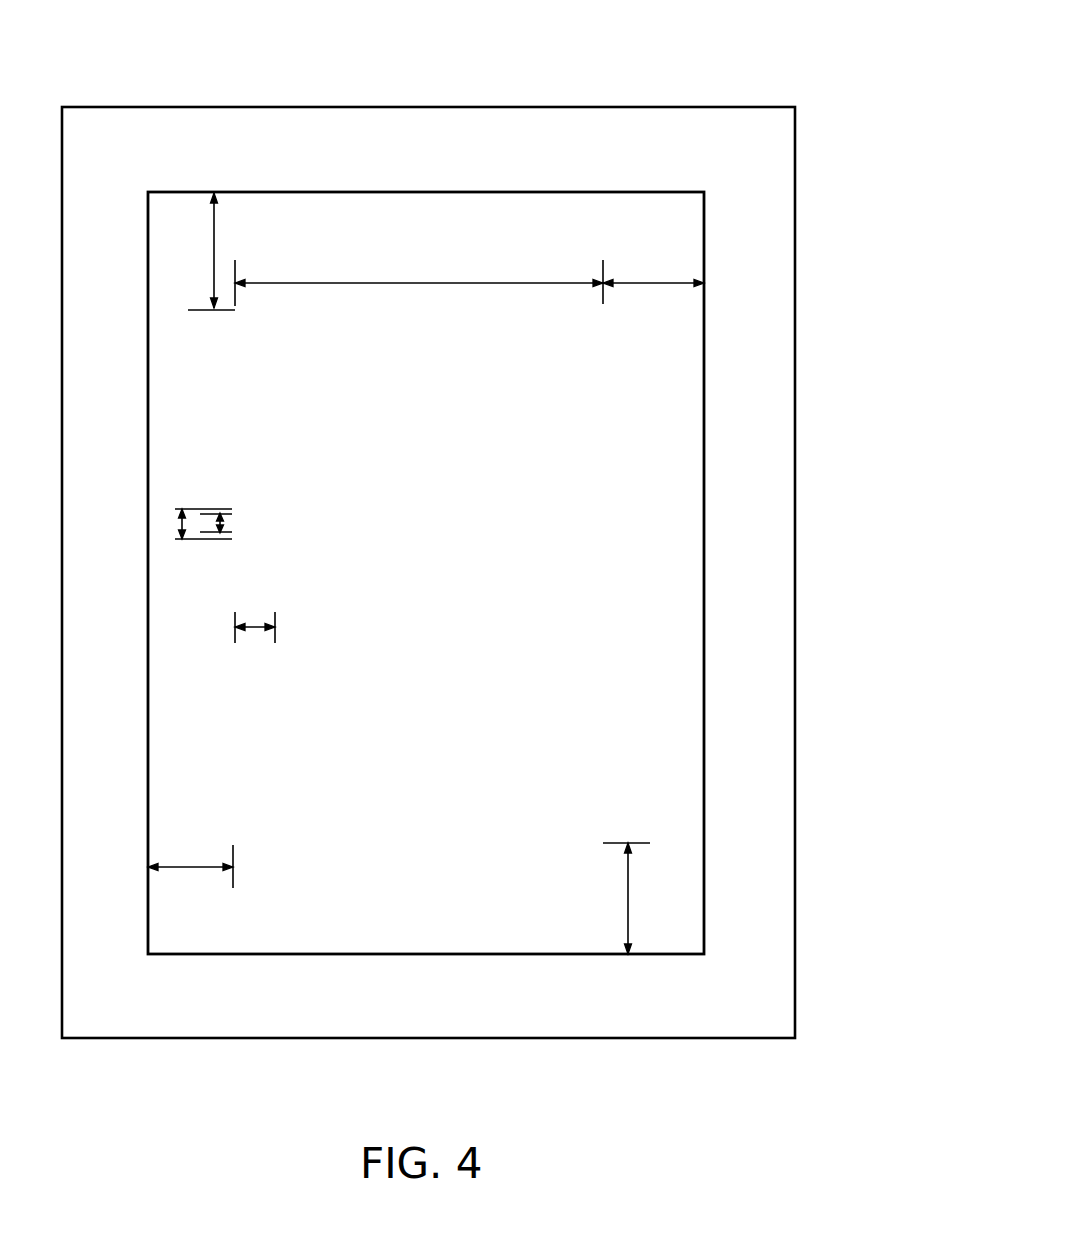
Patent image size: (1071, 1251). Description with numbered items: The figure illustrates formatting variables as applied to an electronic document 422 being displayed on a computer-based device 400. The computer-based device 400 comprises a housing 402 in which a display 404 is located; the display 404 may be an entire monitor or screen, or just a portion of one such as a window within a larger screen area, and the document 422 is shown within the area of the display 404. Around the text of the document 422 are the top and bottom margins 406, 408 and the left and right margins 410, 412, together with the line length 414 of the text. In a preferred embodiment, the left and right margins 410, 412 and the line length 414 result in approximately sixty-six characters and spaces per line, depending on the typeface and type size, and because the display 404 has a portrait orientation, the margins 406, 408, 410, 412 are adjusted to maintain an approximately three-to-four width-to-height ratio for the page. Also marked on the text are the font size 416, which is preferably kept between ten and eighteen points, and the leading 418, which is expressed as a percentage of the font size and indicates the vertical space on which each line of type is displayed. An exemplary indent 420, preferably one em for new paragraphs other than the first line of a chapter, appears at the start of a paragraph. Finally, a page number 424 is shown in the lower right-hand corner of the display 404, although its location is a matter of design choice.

The computer-based device 400 is at (491, 556).
The housing 402 is at (622, 107).
The display 404 is at (708, 432).
The top margin 406 is at (214, 245).
The bottom margin 408 is at (620, 873).
The left margin 410 is at (178, 867).
The right margin 412 is at (670, 283).
The line length 414 is at (385, 283).
The font size 416 is at (216, 523).
The leading 418 is at (180, 511).
The indent 420 is at (252, 630).
The document 422 is at (618, 486).
The page number 424 is at (700, 951).